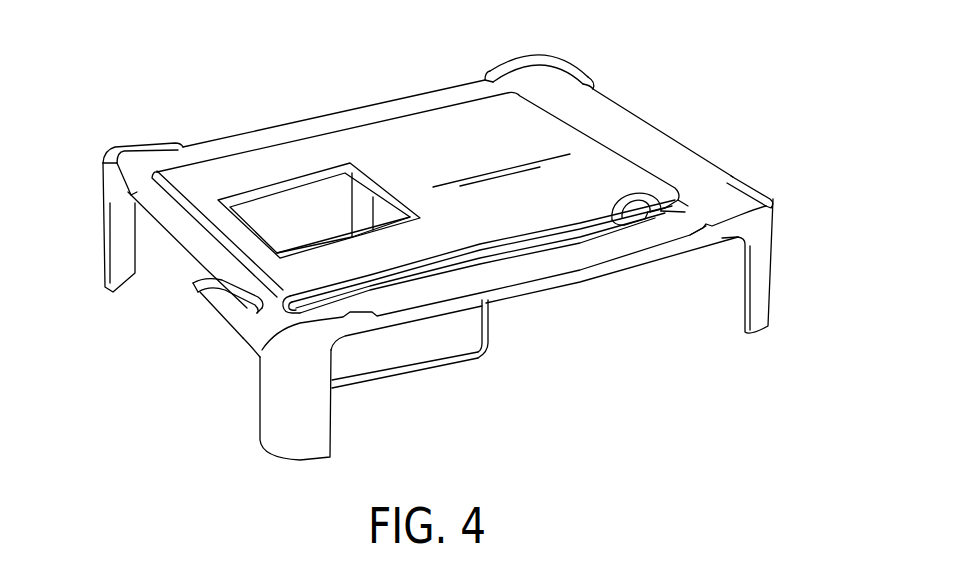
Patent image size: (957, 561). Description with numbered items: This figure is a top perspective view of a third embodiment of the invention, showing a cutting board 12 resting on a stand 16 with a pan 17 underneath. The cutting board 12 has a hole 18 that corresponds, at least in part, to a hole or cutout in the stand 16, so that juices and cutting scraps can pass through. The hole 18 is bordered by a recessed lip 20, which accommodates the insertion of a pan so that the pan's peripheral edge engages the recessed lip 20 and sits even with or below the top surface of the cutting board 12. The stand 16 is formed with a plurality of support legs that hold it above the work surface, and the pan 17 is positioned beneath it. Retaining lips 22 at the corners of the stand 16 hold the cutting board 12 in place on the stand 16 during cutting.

The cutting board 12 is at (448, 115).
The stand 16 is at (640, 128).
The pan 17 is at (413, 342).
The hole 18 is at (302, 214).
The recessed lip 20 is at (647, 216).
The retaining lips 22 is at (137, 145).